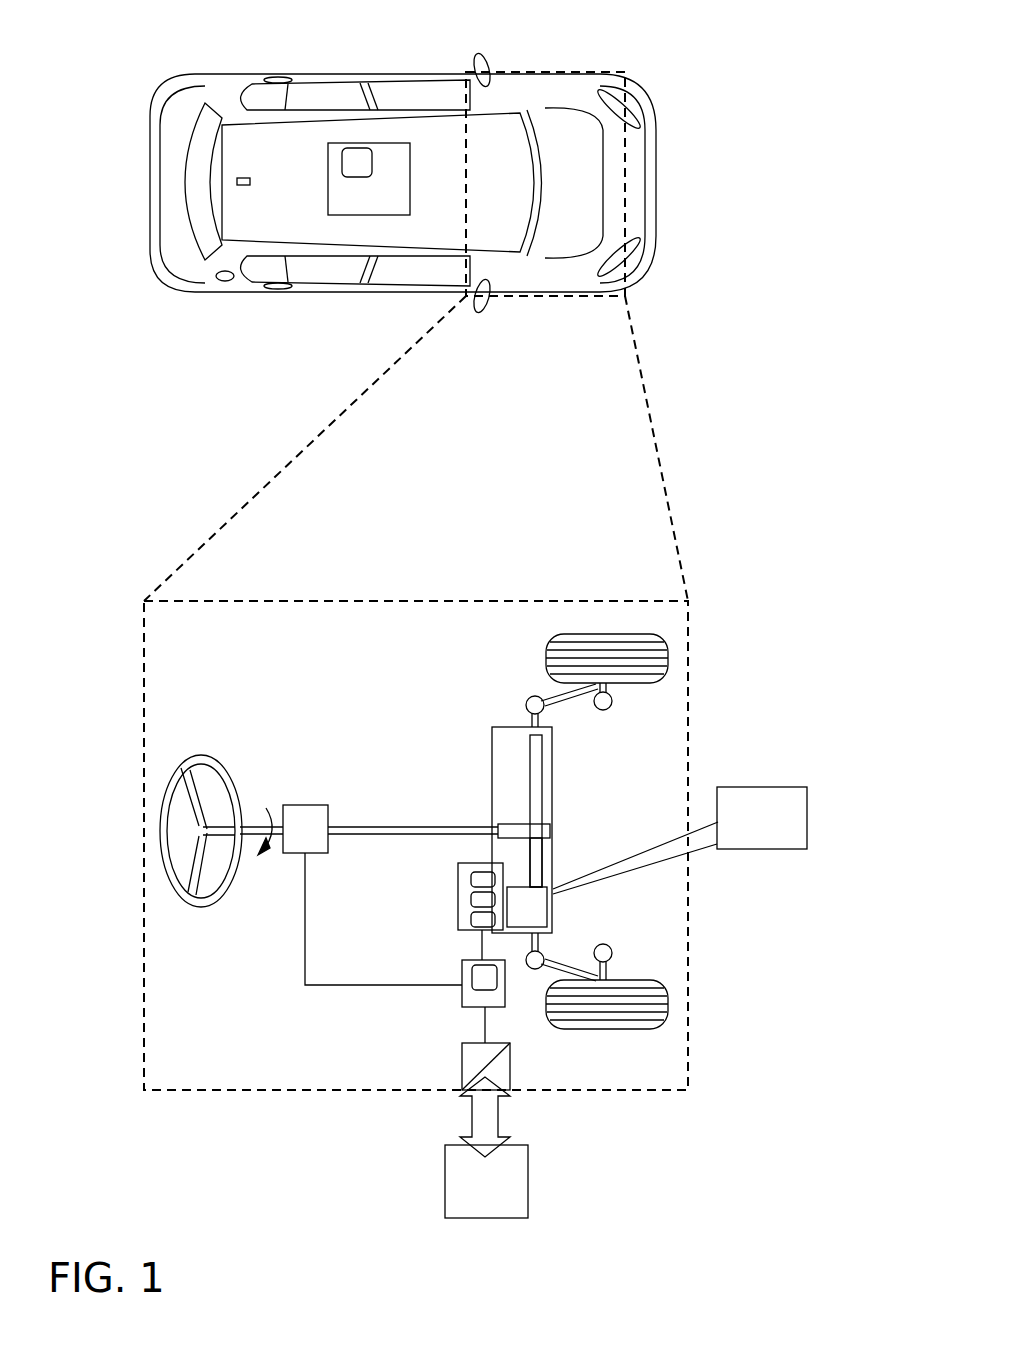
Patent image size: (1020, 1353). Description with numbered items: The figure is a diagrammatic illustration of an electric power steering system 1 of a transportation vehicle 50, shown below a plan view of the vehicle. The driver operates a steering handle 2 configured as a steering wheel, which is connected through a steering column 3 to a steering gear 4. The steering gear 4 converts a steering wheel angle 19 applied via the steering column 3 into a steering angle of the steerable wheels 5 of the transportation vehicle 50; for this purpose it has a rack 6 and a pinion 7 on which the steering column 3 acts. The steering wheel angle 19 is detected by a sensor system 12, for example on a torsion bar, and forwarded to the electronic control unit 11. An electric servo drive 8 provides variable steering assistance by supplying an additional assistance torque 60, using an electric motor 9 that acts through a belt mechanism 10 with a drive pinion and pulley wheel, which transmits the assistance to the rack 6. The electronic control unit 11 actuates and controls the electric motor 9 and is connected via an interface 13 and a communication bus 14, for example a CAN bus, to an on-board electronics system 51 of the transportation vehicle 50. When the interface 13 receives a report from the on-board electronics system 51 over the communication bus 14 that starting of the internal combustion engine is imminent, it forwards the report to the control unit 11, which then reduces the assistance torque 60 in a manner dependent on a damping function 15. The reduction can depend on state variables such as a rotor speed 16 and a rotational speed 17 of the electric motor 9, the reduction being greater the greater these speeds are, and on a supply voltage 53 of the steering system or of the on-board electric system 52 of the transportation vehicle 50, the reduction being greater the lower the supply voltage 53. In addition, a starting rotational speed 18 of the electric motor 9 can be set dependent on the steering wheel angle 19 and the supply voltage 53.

The electric power steering system 1 is at (138, 580).
The steering handle 2 is at (191, 904).
The steering column 3 is at (371, 830).
The steering gear 4 is at (575, 771).
The steerable wheels 5 is at (664, 645).
The rack 6 is at (537, 868).
The pinion 7 is at (548, 830).
The electric servo drive 8 is at (445, 951).
The electric motor 9 is at (470, 864).
The belt mechanism 10 is at (542, 921).
The electronic control unit 11 is at (468, 997).
The sensor system 12 is at (319, 806).
The interface 13 is at (504, 1076).
The communication bus 14 is at (476, 1115).
The damping function 15 is at (488, 983).
The rotor speed 16 is at (482, 880).
The rotational speed 17 is at (482, 900).
The starting rotational speed 18 is at (482, 919).
The steering wheel angle 19 is at (265, 806).
The transportation vehicle 50 is at (265, 124).
The on-board electronics system 51 is at (528, 1197).
The on-board electric system 52 is at (396, 158).
The supply voltage 53 is at (349, 158).
The assistance torque 60 is at (783, 795).